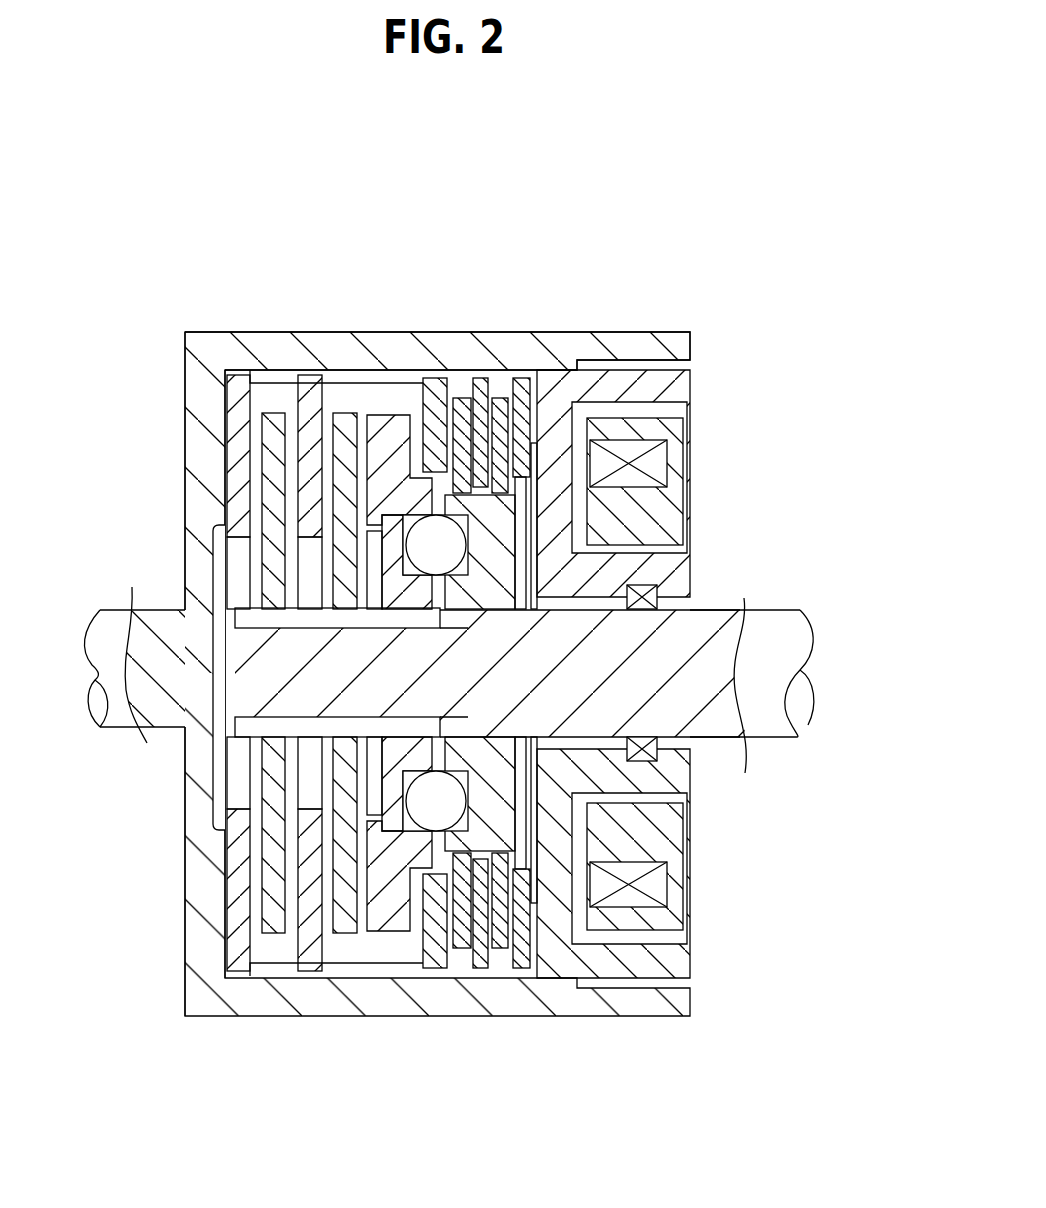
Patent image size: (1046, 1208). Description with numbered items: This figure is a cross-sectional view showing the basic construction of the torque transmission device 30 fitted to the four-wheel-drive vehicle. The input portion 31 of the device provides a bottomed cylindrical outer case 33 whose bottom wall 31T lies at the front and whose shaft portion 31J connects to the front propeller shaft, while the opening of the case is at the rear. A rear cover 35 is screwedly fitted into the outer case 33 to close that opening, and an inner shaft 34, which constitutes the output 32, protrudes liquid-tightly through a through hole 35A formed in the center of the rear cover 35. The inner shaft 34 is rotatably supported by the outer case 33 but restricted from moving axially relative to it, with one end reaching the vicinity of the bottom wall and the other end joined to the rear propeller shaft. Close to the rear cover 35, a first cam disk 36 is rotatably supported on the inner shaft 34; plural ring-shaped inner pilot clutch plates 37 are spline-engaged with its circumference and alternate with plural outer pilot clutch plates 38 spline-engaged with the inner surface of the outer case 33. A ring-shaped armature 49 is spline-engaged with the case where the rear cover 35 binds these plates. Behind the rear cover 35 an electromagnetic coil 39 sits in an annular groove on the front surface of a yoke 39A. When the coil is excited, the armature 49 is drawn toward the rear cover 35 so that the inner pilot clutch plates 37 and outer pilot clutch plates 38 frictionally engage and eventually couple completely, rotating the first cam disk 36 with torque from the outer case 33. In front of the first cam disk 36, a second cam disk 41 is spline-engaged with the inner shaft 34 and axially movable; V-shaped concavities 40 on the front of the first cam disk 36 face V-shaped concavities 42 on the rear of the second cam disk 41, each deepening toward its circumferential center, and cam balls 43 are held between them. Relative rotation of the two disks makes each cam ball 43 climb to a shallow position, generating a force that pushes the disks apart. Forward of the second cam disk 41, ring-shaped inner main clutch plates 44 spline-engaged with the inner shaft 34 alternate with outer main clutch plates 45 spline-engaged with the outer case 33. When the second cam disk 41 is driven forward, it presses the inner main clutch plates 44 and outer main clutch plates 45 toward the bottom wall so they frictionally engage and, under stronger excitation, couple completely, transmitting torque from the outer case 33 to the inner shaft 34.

The torque transmission device 30 is at (651, 259).
The input portion 31 is at (62, 585).
The flange portion of input shaft 31T is at (187, 460).
The journal portion of input shaft 31J is at (97, 729).
The output 32 is at (793, 753).
The outer case 33 is at (640, 338).
The inner shaft 34 is at (716, 727).
The rear cover 35 is at (690, 383).
The through hole 35A is at (692, 751).
The first cam disk 36 is at (510, 555).
The inner pilot clutch plates 37 is at (502, 398).
The outer pilot clutch plates 38 is at (530, 378).
The electromagnetic coil 39 is at (668, 470).
The yoke 39A is at (670, 425).
The V-shaped concavities 40 is at (442, 560).
The second cam disk 41 is at (382, 413).
The V-shaped concavities 42 is at (413, 512).
The cam balls 43 is at (515, 612).
The inner main clutch plates 44 is at (344, 412).
The outer main clutch plates 45 is at (308, 377).
The armature 49 is at (424, 378).